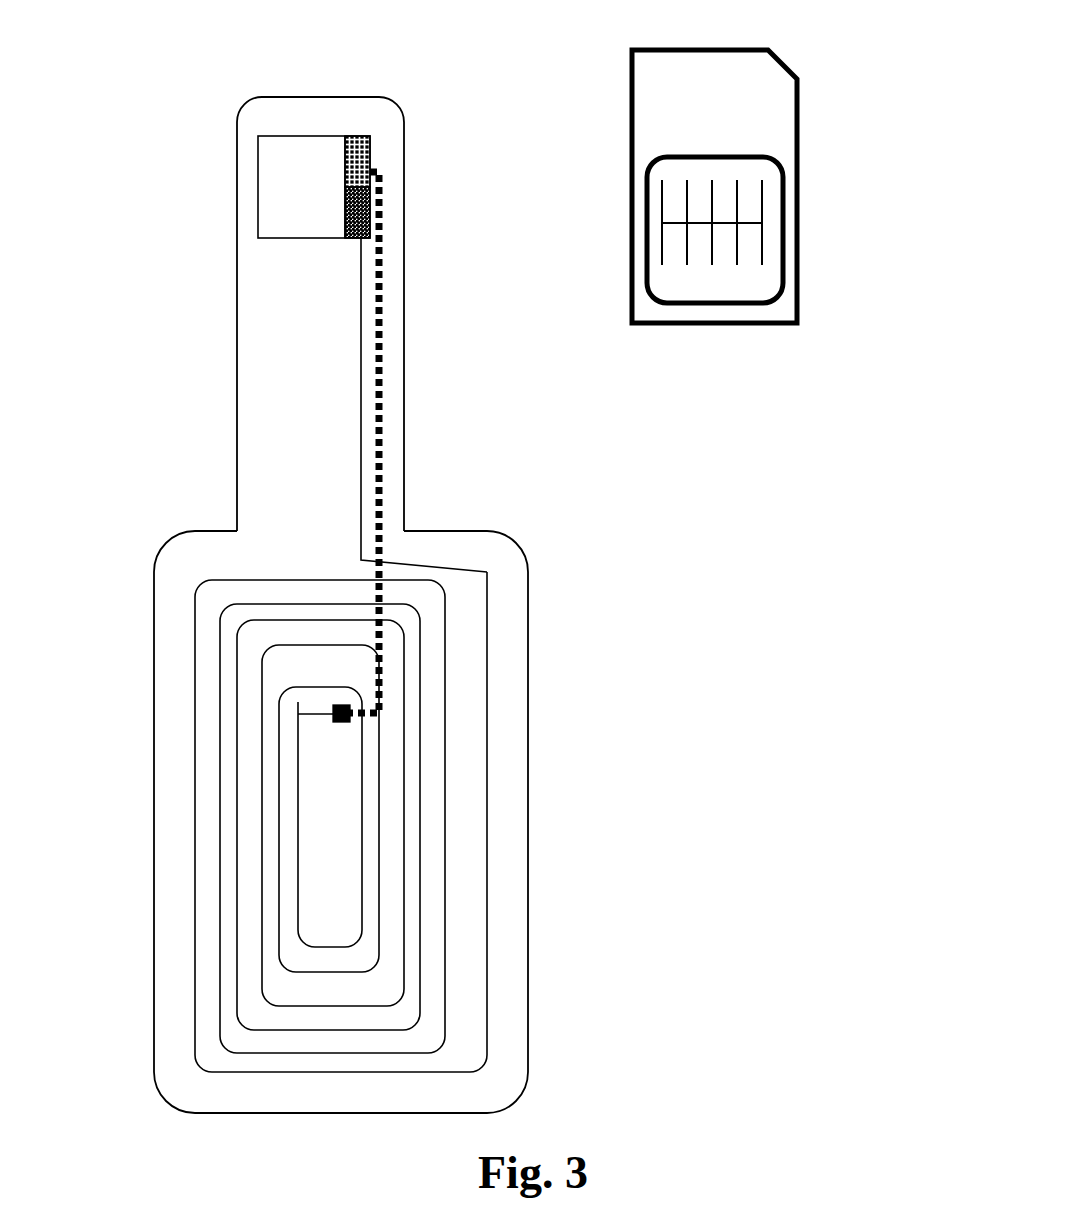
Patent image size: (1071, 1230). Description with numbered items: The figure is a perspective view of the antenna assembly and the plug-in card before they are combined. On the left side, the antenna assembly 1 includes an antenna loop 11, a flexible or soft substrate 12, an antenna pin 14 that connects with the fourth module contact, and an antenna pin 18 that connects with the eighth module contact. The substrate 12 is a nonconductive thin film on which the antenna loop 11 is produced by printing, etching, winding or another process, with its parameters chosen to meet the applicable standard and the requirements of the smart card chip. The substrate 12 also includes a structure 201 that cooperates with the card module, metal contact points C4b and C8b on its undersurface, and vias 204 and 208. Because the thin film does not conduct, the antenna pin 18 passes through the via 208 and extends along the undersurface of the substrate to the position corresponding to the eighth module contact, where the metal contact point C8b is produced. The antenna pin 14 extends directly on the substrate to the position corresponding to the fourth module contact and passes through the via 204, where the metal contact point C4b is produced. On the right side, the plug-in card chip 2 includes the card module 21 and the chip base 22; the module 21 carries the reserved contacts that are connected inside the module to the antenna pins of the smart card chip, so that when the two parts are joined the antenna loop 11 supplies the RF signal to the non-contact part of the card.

The antenna assembly 1 is at (372, 605).
The plug-in card chip 2 is at (783, 229).
The antenna loop 11 is at (445, 822).
The flexible substrate 12 is at (237, 489).
The antenna pin 14 is at (362, 448).
The antenna pin 18 is at (379, 364).
The card module 21 is at (739, 280).
The chip base 22 is at (688, 82).
The structure cooperating with the card module 201 is at (286, 211).
The via 204 is at (430, 211).
The via 208 is at (340, 718).
The metal contact point C8b is at (360, 162).
The metal contact point C4b is at (370, 207).